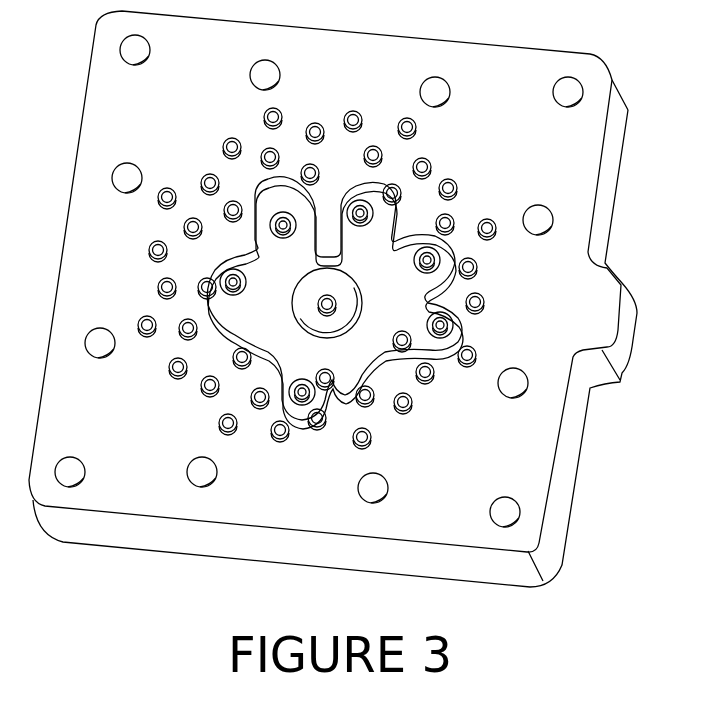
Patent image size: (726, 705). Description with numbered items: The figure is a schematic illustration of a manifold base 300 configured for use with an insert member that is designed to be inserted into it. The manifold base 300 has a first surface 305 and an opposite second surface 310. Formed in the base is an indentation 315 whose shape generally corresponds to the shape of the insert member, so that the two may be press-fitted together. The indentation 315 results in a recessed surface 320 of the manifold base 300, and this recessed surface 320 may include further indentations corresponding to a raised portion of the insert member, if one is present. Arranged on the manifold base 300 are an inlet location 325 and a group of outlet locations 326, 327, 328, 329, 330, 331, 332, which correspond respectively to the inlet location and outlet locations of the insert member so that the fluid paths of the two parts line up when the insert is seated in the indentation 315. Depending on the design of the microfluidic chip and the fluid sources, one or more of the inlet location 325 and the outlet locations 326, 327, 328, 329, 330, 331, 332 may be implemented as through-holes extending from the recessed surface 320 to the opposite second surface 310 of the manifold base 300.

The manifold base 300 is at (667, 604).
The first surface 305 is at (547, 153).
The second surface 310 is at (603, 513).
The indentation 315 is at (327, 222).
The recessed surface 320 is at (385, 248).
The inlet location 325 is at (280, 223).
The outlet location 326 is at (372, 190).
The outlet location 327 is at (398, 238).
The outlet location 328 is at (470, 352).
The outlet location 329 is at (355, 388).
The outlet location 330 is at (300, 395).
The outlet location 331 is at (225, 322).
The outlet location 332 is at (228, 275).